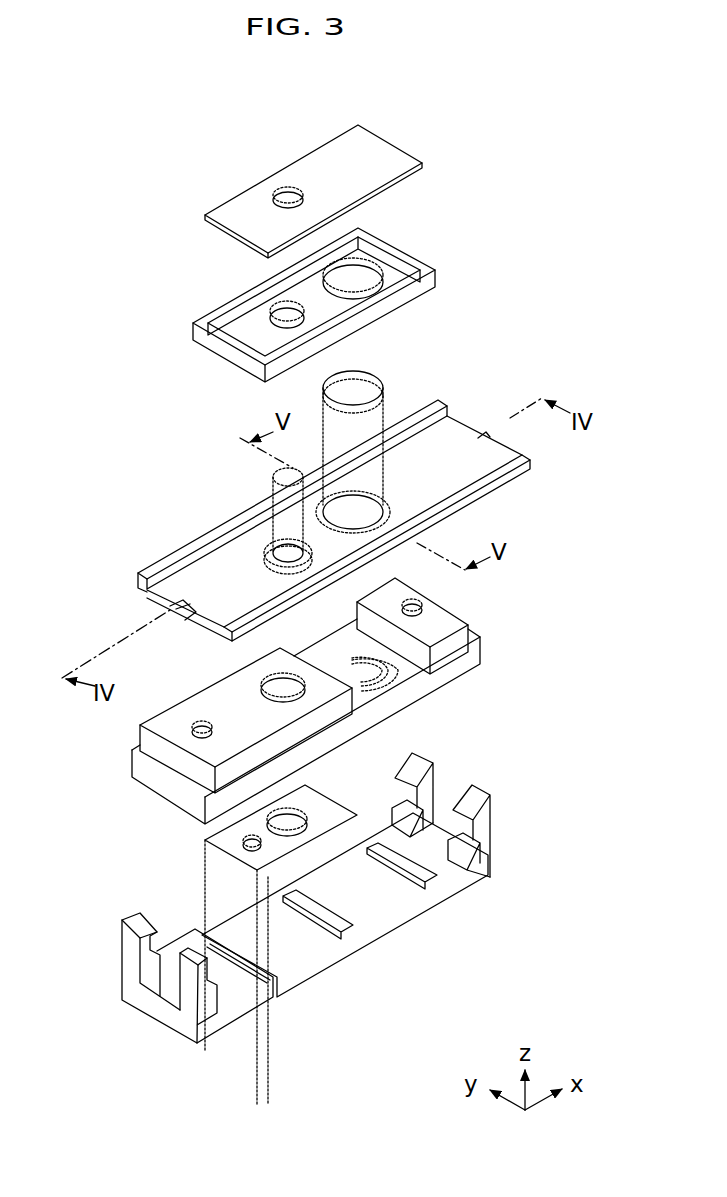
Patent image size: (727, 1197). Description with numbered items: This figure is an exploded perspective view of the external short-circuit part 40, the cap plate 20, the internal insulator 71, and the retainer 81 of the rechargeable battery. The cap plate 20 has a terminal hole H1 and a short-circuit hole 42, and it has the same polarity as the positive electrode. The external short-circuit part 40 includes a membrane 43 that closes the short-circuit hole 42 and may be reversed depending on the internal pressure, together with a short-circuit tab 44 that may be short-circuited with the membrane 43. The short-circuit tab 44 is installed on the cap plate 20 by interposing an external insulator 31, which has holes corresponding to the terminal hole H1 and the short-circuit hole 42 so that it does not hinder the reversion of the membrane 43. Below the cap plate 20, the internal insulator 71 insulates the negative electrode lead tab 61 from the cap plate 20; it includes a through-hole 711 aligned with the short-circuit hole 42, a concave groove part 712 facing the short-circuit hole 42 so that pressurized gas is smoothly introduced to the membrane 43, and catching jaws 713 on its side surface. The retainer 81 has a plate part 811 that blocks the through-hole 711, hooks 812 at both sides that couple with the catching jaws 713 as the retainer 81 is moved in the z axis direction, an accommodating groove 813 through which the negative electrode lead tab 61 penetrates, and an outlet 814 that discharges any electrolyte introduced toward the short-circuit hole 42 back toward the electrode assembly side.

The cap plate 20 is at (316, 520).
The external insulator 31 is at (204, 361).
The external short-circuit part 40 is at (346, 261).
The short-circuit hole 42 is at (365, 493).
The membrane 43 is at (385, 385).
The short-circuit tab 44 is at (247, 200).
The negative electrode lead tab 61 is at (200, 858).
The internal insulator 71 is at (303, 698).
The through-hole 711 is at (387, 650).
The concave groove part 712 is at (407, 677).
The catching jaws 713 is at (477, 633).
The retainer 81 is at (323, 911).
The plate part 811 is at (412, 914).
The hooks 812 is at (478, 800).
The accommodating groove 813 is at (248, 967).
The outlet 814 is at (437, 875).
The terminal hole H1 is at (283, 540).